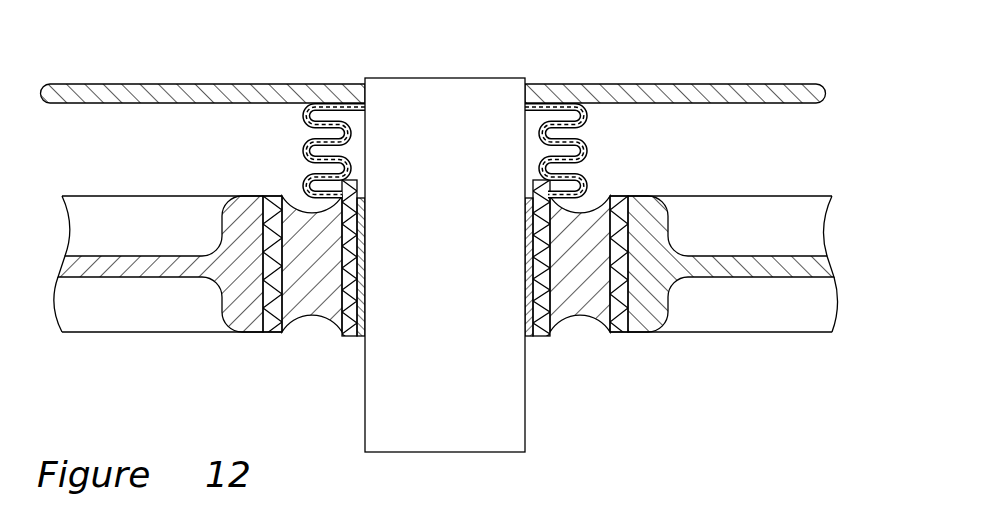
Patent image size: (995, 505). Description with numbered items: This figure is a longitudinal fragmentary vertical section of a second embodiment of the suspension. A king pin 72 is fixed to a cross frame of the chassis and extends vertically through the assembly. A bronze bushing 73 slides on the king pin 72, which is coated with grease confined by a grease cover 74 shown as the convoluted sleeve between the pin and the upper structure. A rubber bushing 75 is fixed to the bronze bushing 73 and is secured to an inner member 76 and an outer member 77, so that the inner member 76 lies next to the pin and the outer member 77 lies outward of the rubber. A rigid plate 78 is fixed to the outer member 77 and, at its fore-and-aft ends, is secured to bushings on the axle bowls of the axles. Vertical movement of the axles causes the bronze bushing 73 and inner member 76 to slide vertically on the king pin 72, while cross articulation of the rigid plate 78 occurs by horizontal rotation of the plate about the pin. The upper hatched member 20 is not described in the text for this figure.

The outer skin panel 20 is at (231, 82).
The king pin 72 is at (472, 77).
The bronze bushing 73 is at (528, 336).
The grease cover 74 is at (580, 132).
The rubber bushing 75 is at (316, 313).
The inner member 76 is at (356, 180).
The outer member 77 is at (618, 194).
The rigid plate 78 is at (719, 257).